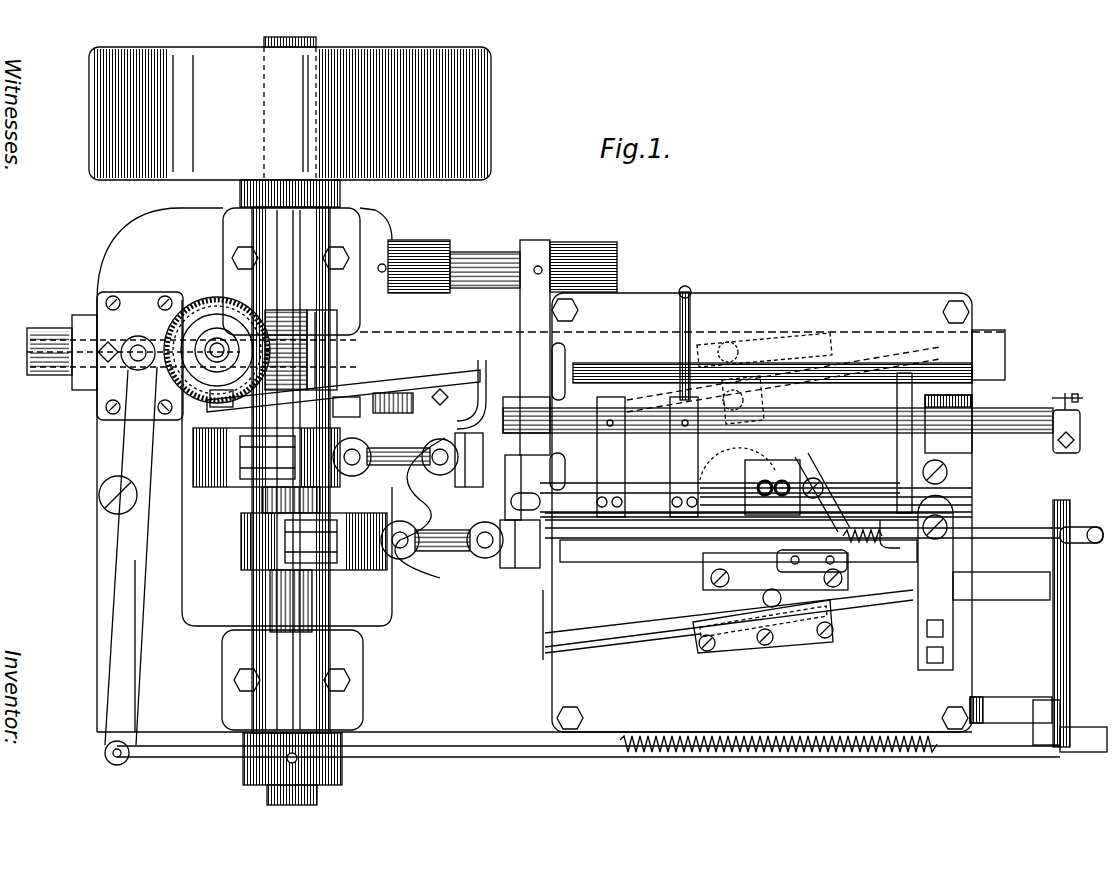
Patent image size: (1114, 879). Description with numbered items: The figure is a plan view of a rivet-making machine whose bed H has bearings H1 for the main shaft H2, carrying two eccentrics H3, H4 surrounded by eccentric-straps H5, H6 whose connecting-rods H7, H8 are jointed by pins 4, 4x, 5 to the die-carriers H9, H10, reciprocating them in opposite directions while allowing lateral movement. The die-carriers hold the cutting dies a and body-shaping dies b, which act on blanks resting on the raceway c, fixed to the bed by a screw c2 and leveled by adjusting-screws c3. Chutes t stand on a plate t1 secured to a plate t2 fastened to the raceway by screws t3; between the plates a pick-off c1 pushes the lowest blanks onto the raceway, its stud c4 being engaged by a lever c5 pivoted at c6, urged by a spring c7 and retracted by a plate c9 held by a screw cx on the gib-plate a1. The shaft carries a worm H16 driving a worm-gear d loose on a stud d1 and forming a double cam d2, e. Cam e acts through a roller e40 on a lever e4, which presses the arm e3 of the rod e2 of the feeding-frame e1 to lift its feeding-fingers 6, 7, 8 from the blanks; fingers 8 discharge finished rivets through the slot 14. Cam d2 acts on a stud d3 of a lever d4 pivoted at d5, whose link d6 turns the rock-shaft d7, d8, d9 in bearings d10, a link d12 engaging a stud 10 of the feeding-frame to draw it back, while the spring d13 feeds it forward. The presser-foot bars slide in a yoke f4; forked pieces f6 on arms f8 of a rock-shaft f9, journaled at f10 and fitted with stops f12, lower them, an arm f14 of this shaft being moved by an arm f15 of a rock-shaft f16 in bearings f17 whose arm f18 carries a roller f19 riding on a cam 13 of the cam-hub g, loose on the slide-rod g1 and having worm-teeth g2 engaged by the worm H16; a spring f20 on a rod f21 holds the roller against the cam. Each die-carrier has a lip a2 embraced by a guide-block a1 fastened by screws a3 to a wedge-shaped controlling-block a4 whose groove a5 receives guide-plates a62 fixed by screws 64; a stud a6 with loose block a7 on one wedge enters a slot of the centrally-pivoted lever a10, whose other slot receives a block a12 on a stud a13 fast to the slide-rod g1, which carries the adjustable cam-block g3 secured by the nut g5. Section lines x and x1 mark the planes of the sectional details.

The bed H is at (517, 470).
The bearings H1 is at (226, 236).
The main rotating shaft H2 is at (318, 42).
The cam or eccentric H3 is at (312, 570).
The cam or eccentric H4 is at (225, 488).
The eccentric-strap H5 is at (297, 541).
The eccentric-strap H6 is at (200, 460).
The connecting-rod H7 is at (460, 551).
The connecting-rod H8 is at (408, 462).
The die-carrier H9 is at (525, 585).
The die-carrier H10 is at (420, 508).
The worm H16 is at (300, 335).
The cam-hub g is at (301, 350).
The slide-rod g1 is at (27, 345).
The worm-teeth g2 is at (290, 312).
The cam-block g3 is at (90, 312).
The nut g5 is at (78, 330).
The cam 13 is at (344, 354).
The worm-gear d is at (245, 318).
The stud d1 is at (214, 340).
The cam d2 is at (190, 418).
The roller or stud d3 is at (133, 370).
The lever d4 is at (108, 460).
The pivot d5 is at (100, 498).
The link d6 is at (582, 760).
The rock-shaft d7 is at (1090, 727).
The rock-shaft d8 is at (1070, 647).
The rock-shaft d9 is at (1085, 527).
The bearings d10 is at (1025, 582).
The link d12 is at (1025, 530).
The spring d13 is at (790, 755).
The cam e is at (232, 318).
The feeding-frame e1 is at (545, 472).
The rod e2 is at (793, 423).
The arm or projection e3 is at (485, 372).
The lever e4 is at (445, 388).
The roller e40 is at (222, 408).
The yoke f4 is at (568, 471).
The forked piece f6 is at (756, 523).
The lever or arm f8 is at (629, 457).
The rock-shaft f9 is at (789, 369).
The bearings f10 is at (985, 402).
The adjustable stops f12 is at (647, 493).
The arm f14 is at (565, 352).
The arm f15 is at (520, 322).
The rock-shaft f16 is at (490, 258).
The bearings f17 is at (420, 248).
The arm f18 is at (355, 395).
The roller or stud f19 is at (330, 370).
The spiral spring f20 is at (689, 334).
The rod f21 is at (692, 411).
The cutting or grooving dies a is at (731, 535).
The guide-block a1 is at (715, 601).
The lip a2 is at (738, 564).
The screws a3 is at (712, 580).
The controlling-block a4 is at (550, 620).
The groove a5 is at (545, 640).
The stud a6 is at (782, 599).
The loose block a7 is at (734, 609).
The centrally-pivoted lever a10 is at (760, 405).
The block a12 is at (730, 350).
The stud a13 is at (755, 348).
The guide-plates a62 is at (748, 648).
The screws 64 is at (698, 650).
The raceway c is at (836, 443).
The pick-off c1 is at (822, 487).
The screw c2 is at (960, 500).
The adjusting-screws c3 is at (959, 508).
The stud c4 is at (737, 461).
The lever c5 is at (880, 476).
The pivot c6 is at (854, 451).
The spring c7 is at (895, 537).
The plate c9 is at (862, 547).
The screw cx is at (813, 547).
The chutes or tubes t is at (757, 487).
The plate t1 is at (734, 461).
The plate t2 is at (834, 472).
The screws t3 is at (854, 472).
The section line x is at (790, 703).
The section line x1 is at (410, 240).
The pin 4 is at (440, 455).
The pin 4x is at (452, 546).
The pin 5 is at (352, 457).
The feeding-fingers 6 is at (811, 554).
The feeding-fingers 7 is at (659, 548).
The feeding-fingers 8 is at (614, 548).
The stud 10 is at (570, 548).
The throat or slot 14 is at (515, 499).
The body-shaping dies b is at (632, 549).